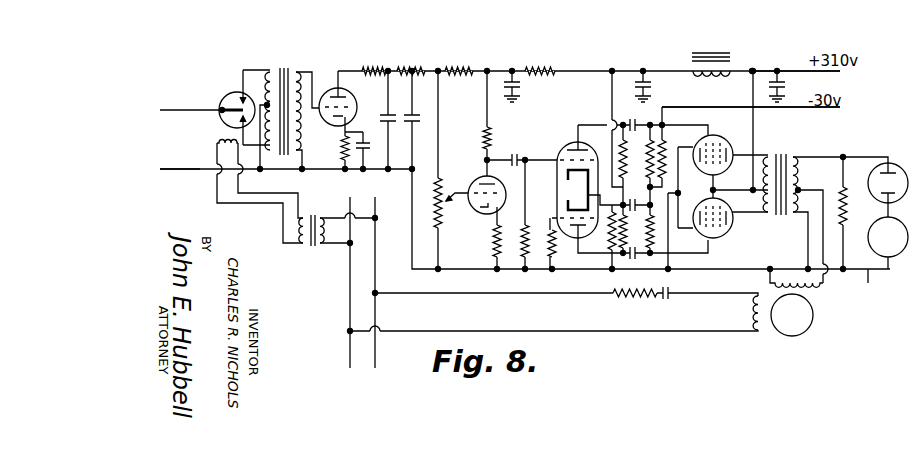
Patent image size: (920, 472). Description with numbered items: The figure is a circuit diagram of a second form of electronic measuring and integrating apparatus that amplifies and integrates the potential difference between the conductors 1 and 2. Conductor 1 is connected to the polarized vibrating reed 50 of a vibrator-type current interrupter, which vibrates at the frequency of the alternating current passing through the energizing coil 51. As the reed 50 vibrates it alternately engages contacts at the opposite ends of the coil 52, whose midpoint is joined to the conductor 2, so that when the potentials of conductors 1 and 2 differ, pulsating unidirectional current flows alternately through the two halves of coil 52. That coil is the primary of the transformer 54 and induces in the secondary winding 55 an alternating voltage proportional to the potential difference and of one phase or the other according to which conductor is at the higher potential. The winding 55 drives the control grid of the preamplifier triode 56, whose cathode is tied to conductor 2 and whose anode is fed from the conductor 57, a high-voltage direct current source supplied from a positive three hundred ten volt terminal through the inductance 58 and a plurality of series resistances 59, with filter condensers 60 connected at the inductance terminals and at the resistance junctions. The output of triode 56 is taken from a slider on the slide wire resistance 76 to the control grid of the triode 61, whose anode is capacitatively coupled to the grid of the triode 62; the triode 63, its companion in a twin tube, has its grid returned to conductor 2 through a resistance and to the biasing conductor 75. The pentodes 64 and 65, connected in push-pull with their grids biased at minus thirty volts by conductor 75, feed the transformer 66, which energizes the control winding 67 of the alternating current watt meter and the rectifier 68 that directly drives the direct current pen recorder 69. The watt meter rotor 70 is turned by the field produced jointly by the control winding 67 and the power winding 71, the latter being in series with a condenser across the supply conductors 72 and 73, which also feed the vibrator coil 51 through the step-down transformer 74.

The conductor 1 is at (200, 100).
The conductor 2 is at (190, 187).
The polarized vibrating element or reed 50 is at (232, 92).
The energizing coil 51 is at (215, 140).
The coil 52 is at (268, 121).
The transformer 54 is at (282, 70).
The secondary winding 55 is at (300, 124).
The preamplifier triode 56 is at (357, 104).
The conductor 57 is at (797, 69).
The inductance 58 is at (692, 67).
The resistances 59 is at (425, 70).
The filter condensers 60 is at (406, 127).
The triode 61 is at (481, 177).
The triode 62 is at (563, 148).
The triode 63 is at (574, 238).
The pentode 64 is at (723, 142).
The pentode 65 is at (732, 232).
The transformer 66 is at (778, 159).
The control or current winding 67 is at (818, 291).
The rectifier 68 is at (872, 200).
The pen recorder 69 is at (872, 241).
The rotor 70 is at (799, 188).
The power winding 71 is at (751, 312).
The supply conductor 72 is at (377, 268).
The supply conductor 73 is at (350, 271).
The step-down transformer 74 is at (313, 214).
The conductor 75 is at (812, 109).
The slide wire resistance 76 is at (442, 240).